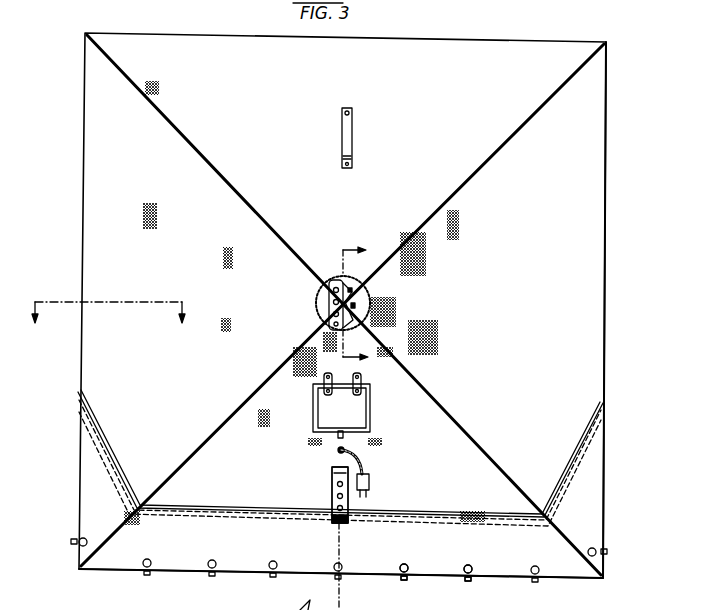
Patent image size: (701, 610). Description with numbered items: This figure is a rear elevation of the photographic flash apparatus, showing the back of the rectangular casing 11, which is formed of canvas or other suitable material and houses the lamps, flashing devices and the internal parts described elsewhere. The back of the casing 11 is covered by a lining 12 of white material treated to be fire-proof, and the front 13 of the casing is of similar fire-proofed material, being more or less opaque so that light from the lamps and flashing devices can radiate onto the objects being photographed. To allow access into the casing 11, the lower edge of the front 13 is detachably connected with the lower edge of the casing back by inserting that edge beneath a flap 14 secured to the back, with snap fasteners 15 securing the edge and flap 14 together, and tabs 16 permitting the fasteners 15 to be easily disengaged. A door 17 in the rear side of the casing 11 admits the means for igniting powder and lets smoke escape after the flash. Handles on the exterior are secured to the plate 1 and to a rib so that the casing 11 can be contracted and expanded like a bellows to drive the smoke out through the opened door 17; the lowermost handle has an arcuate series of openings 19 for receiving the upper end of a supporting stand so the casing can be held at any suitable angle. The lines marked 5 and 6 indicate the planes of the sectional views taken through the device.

The plate 1 is at (342, 467).
The section line 5- 5 is at (103, 325).
The section line 6- 6 is at (363, 309).
The rectangular casing 11 is at (622, 276).
The lining 12 is at (570, 338).
The front 13 is at (35, 600).
The flap 14 is at (450, 556).
The snap fasteners 15 is at (396, 579).
The tabs 16 is at (468, 581).
The door 17 is at (362, 408).
The arcuate series of openings 19 is at (332, 498).